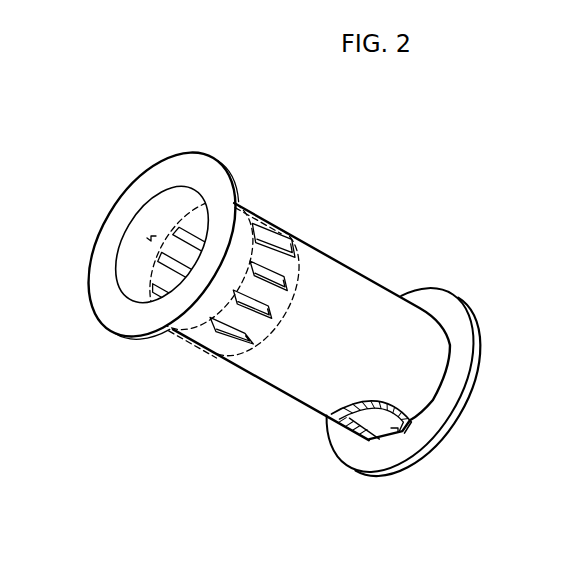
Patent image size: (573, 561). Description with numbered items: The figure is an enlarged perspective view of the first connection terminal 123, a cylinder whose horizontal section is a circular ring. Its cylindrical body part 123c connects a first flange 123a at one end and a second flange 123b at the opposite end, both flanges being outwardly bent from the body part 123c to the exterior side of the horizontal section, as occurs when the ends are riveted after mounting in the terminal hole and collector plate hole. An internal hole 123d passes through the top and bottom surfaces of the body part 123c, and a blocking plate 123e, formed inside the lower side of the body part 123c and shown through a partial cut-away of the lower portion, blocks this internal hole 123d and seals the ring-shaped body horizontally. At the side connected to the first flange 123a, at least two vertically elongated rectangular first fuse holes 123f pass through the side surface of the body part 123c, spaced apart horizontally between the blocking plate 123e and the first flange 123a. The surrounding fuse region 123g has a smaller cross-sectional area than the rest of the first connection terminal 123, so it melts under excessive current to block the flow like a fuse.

The first connection terminal 123 is at (233, 113).
The first flange 123a is at (175, 165).
The second flange 123b is at (453, 307).
The body part 123c is at (366, 288).
The internal hole 123d is at (147, 238).
The blocking plate 123e is at (338, 421).
The first fuse hole 123f is at (290, 280).
The fuse region 123g is at (257, 197).